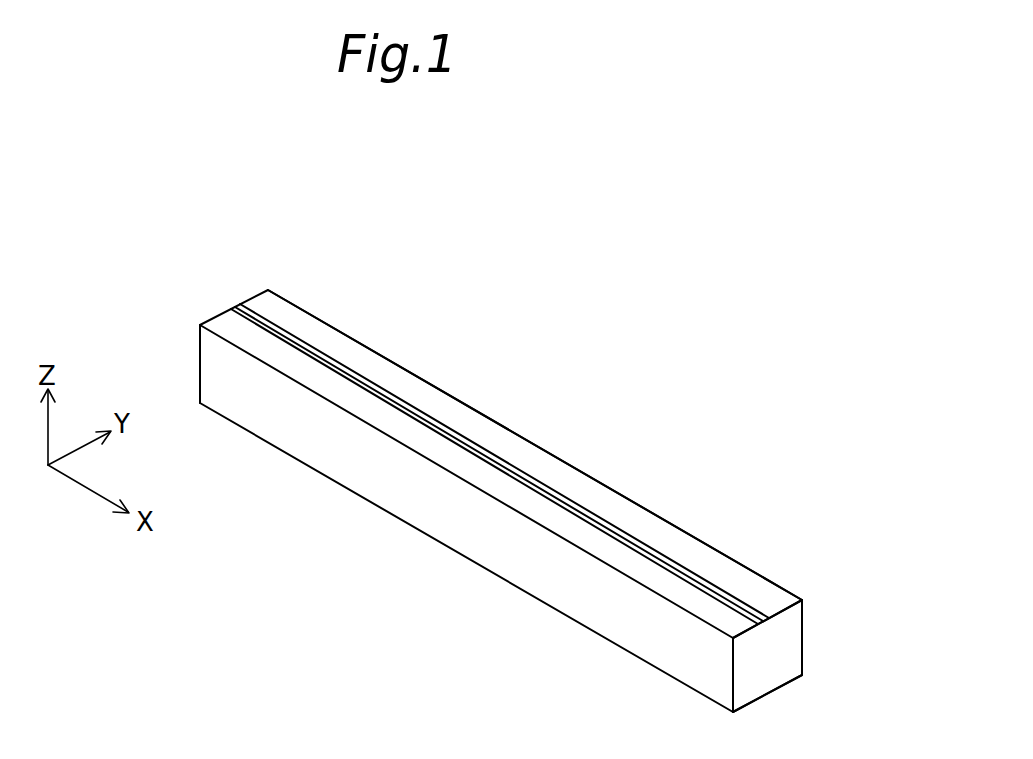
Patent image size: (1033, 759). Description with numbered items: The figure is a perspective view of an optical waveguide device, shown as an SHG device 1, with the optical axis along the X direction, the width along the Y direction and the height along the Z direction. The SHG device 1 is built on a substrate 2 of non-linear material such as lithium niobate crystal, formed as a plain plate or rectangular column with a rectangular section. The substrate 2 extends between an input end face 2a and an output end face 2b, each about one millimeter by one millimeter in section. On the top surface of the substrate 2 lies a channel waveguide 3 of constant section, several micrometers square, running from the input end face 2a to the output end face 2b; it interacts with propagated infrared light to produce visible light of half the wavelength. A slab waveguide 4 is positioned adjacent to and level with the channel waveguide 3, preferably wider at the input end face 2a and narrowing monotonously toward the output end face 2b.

The SHG device 1 is at (509, 442).
The substrate 2 is at (509, 500).
The input end face 2a is at (188, 354).
The output end face 2b is at (815, 650).
The channel waveguide 3 is at (609, 537).
The slab waveguide 4 is at (535, 466).